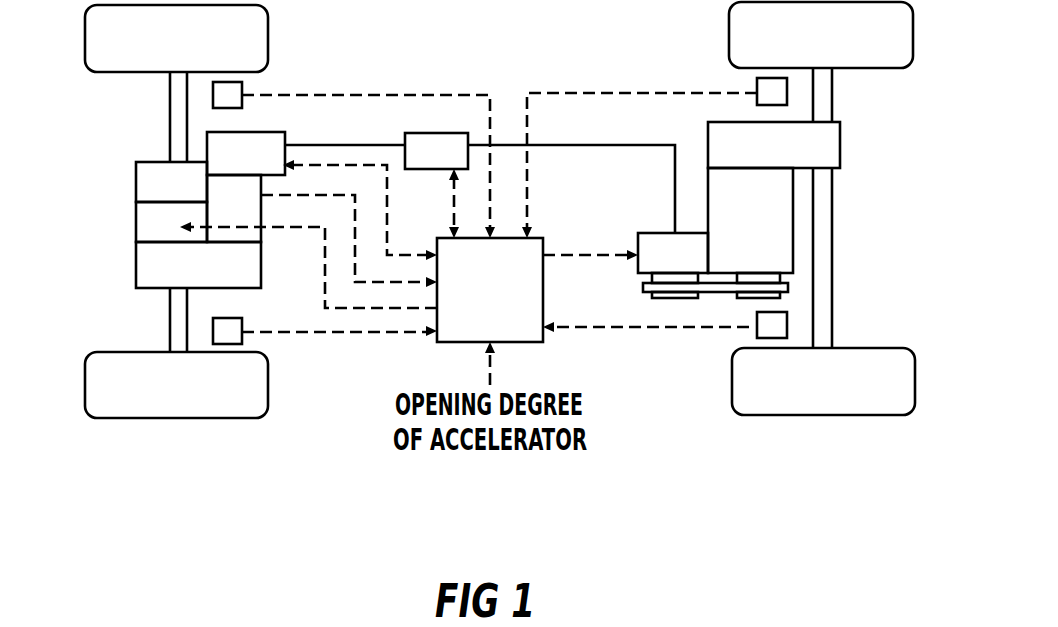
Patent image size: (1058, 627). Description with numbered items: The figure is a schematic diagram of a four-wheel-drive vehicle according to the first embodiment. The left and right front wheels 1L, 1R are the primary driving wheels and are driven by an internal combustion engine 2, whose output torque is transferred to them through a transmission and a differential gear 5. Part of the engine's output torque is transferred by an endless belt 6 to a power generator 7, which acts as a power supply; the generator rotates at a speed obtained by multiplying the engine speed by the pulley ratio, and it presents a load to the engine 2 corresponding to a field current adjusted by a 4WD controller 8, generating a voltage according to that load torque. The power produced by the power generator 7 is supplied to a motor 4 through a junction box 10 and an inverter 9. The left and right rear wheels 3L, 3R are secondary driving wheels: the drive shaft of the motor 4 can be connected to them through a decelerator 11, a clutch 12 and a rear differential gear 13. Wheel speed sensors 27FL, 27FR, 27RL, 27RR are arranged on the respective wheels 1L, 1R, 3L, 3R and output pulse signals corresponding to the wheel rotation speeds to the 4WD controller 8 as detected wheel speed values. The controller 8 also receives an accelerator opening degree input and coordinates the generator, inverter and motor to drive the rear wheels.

The left front wheel 1L is at (913, 33).
The right front wheel 1R is at (915, 383).
The internal combustion engine 2 is at (793, 220).
The left rear wheel 3L is at (85, 40).
The right rear wheel 3R is at (85, 392).
The motor 4 is at (261, 233).
The differential gear 5 is at (840, 143).
The endless belt 6 is at (788, 285).
The power generator 7 is at (657, 233).
The 4WD controller 8 is at (543, 288).
The inverter 9 is at (265, 132).
The junction box 10 is at (418, 169).
The decelerator 11 is at (135, 265).
The clutch 12 is at (135, 225).
The differential gear 13 is at (135, 182).
The wheel speed sensor 27RL is at (243, 87).
The wheel speed sensor 27RR is at (242, 340).
The wheel speed sensor 27FL is at (757, 82).
The wheel speed sensor 27FR is at (757, 332).